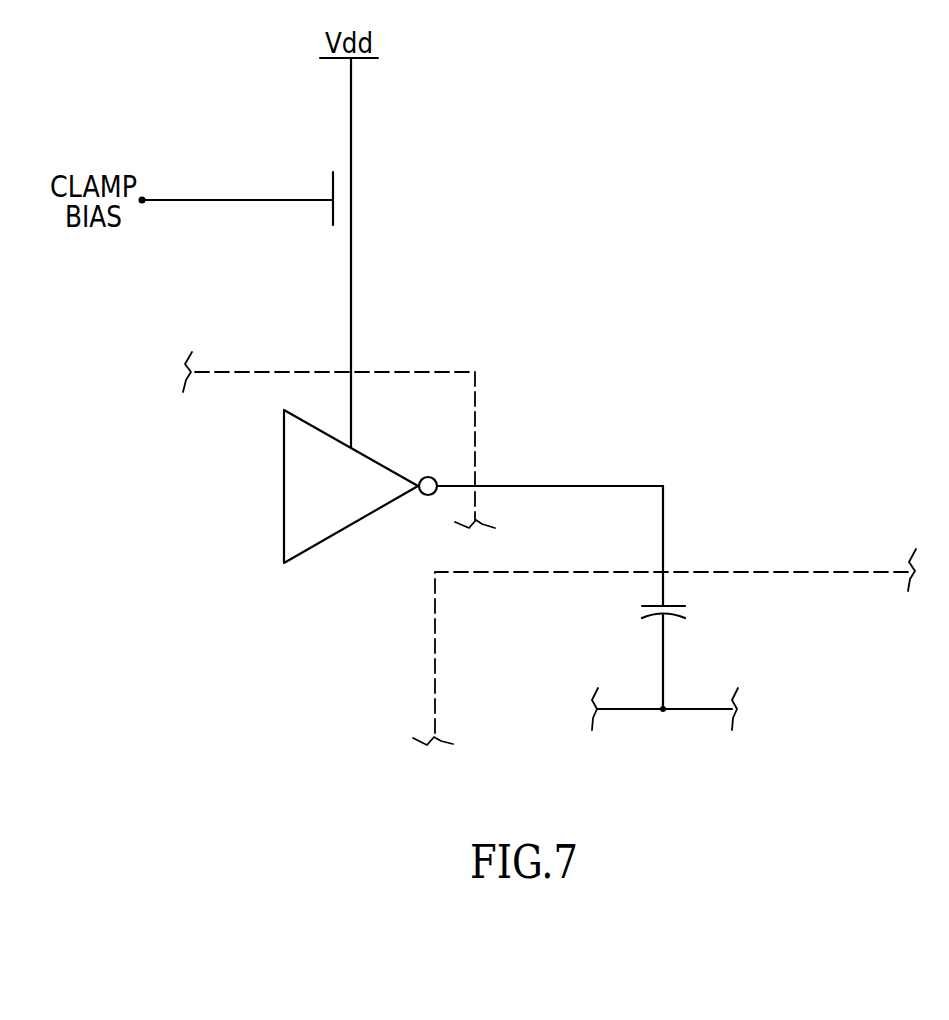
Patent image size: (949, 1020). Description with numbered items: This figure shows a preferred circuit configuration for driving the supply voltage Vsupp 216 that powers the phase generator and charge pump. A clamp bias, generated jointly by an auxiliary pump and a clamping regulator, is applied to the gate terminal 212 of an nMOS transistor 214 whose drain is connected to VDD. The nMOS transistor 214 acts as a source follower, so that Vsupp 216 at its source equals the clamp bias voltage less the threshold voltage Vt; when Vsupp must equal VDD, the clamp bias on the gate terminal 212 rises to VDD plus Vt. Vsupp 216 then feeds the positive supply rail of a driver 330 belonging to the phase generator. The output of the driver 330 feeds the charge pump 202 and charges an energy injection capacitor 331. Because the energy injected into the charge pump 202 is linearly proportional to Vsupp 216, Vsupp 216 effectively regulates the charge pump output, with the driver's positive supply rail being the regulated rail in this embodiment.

The charge pump 202 is at (798, 571).
The gate terminal 212 is at (194, 200).
The nMOS transistor 214 is at (372, 191).
The Vsupp 216 is at (352, 290).
The driver 330 is at (383, 462).
The energy injection capacitor 331 is at (678, 602).